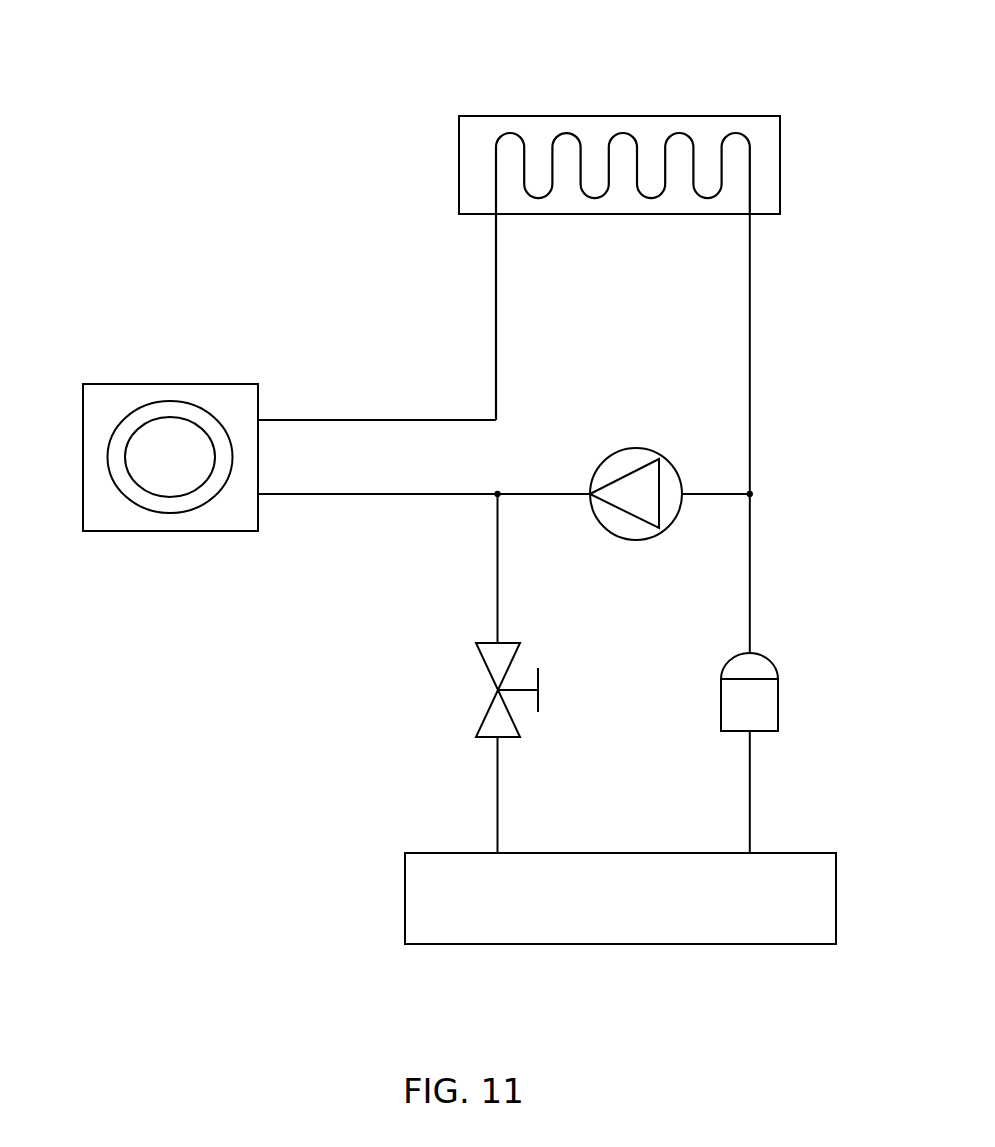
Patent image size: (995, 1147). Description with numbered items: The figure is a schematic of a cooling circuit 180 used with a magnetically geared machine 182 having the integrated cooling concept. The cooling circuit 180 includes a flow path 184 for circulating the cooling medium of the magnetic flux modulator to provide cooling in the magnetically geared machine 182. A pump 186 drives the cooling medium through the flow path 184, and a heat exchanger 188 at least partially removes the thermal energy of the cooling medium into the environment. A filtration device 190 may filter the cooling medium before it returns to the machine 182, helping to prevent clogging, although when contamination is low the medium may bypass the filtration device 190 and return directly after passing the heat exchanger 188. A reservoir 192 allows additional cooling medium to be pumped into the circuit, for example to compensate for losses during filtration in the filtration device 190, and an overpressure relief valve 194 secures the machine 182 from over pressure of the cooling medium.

The cooling circuit 180 is at (140, 55).
The magnetically geared machine 182 is at (169, 384).
The flow path 184 is at (750, 362).
The pump 186 is at (636, 448).
The heat exchanger 188 is at (780, 177).
The filtration device 190 is at (778, 716).
The reservoir 192 is at (621, 853).
The overpressure relief valve 194 is at (480, 662).